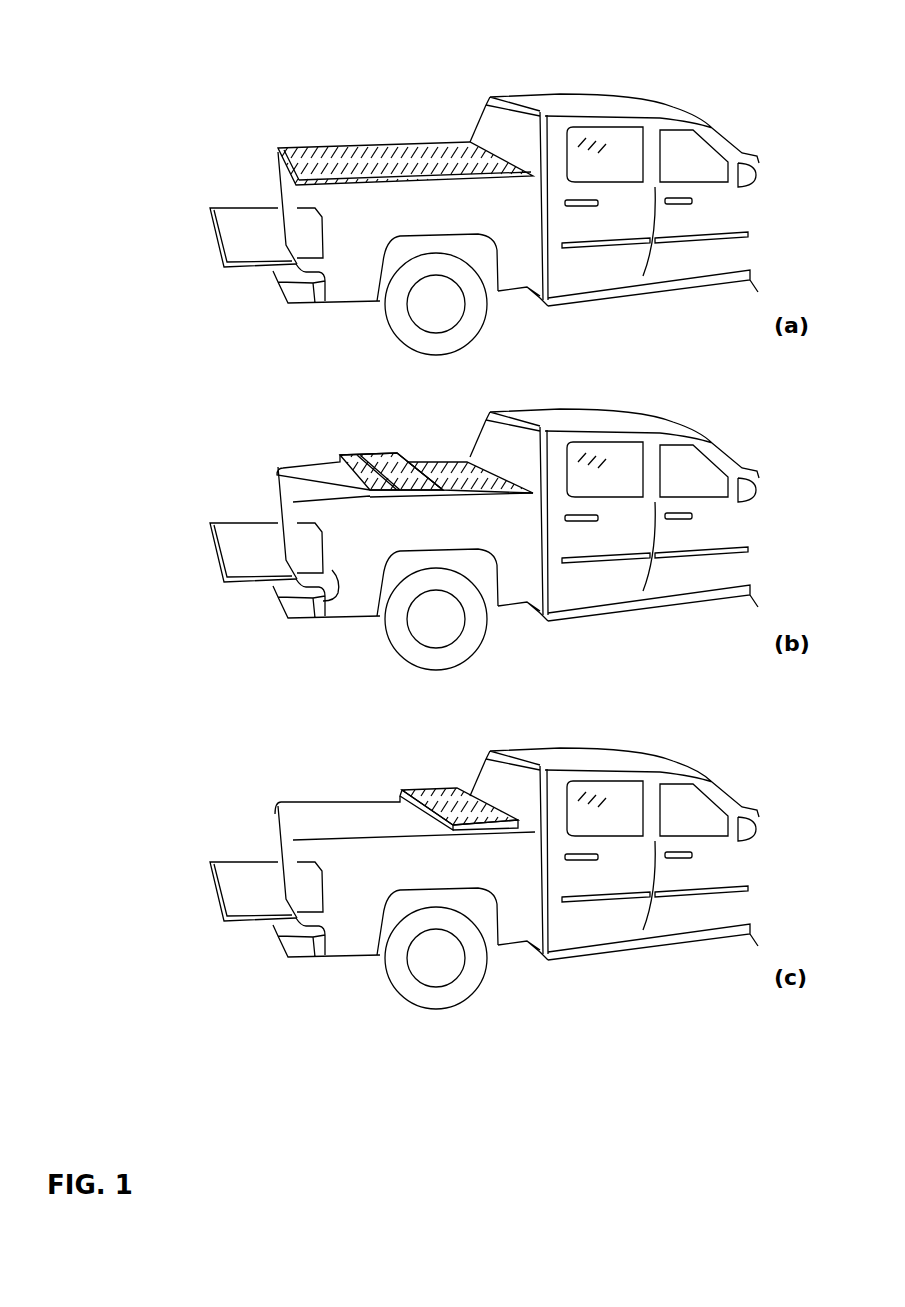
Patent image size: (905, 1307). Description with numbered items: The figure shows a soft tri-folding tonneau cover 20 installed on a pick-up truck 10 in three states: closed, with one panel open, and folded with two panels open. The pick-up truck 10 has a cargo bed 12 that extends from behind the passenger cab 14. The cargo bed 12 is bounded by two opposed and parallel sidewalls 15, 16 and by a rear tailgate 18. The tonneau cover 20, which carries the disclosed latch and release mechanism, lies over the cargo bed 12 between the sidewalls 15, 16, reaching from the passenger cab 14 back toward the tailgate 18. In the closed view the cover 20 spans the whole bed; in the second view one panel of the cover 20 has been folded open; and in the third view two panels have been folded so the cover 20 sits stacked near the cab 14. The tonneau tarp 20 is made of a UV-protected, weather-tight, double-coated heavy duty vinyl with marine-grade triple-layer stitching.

The pick-up truck 10 is at (732, 122).
The cargo bed 12 is at (405, 828).
The passenger cab 14 is at (607, 102).
The sidewall 15 is at (282, 604).
The sidewall 16 is at (379, 439).
The rear tailgate 18 is at (228, 858).
The soft tri-folding tonneau cover 20 is at (373, 150).